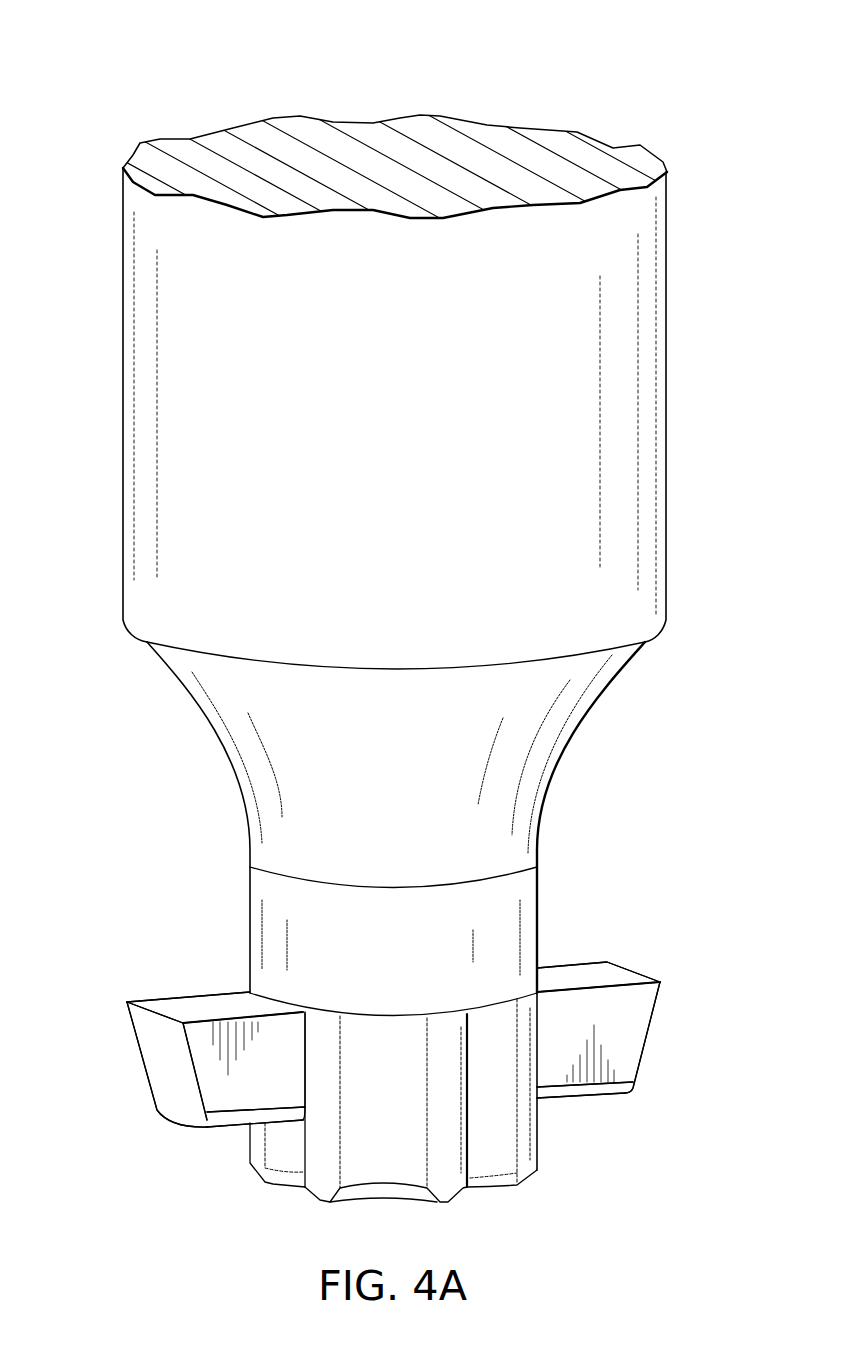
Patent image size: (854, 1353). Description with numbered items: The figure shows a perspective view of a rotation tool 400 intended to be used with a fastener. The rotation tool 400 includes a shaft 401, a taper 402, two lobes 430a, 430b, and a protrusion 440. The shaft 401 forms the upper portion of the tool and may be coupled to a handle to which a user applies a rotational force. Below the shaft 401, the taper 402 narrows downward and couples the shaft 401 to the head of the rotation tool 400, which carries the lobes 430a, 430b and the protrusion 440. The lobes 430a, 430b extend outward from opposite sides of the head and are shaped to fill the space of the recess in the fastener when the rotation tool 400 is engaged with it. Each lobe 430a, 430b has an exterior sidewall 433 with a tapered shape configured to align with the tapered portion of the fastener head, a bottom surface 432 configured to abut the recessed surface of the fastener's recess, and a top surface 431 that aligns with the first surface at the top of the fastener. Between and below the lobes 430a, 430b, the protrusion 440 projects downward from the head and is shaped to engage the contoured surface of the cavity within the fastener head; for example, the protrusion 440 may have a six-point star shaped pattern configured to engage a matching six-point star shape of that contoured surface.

The rotation tool 400 is at (246, 62).
The shaft 401 is at (122, 377).
The taper 402 is at (569, 731).
The lobe 430a is at (666, 1016).
The lobe 430b is at (127, 1050).
The top surface 431 is at (586, 972).
The bottom surface 432 is at (587, 1099).
The exterior sidewall 433 is at (643, 1057).
The protrusion 440 is at (485, 1155).